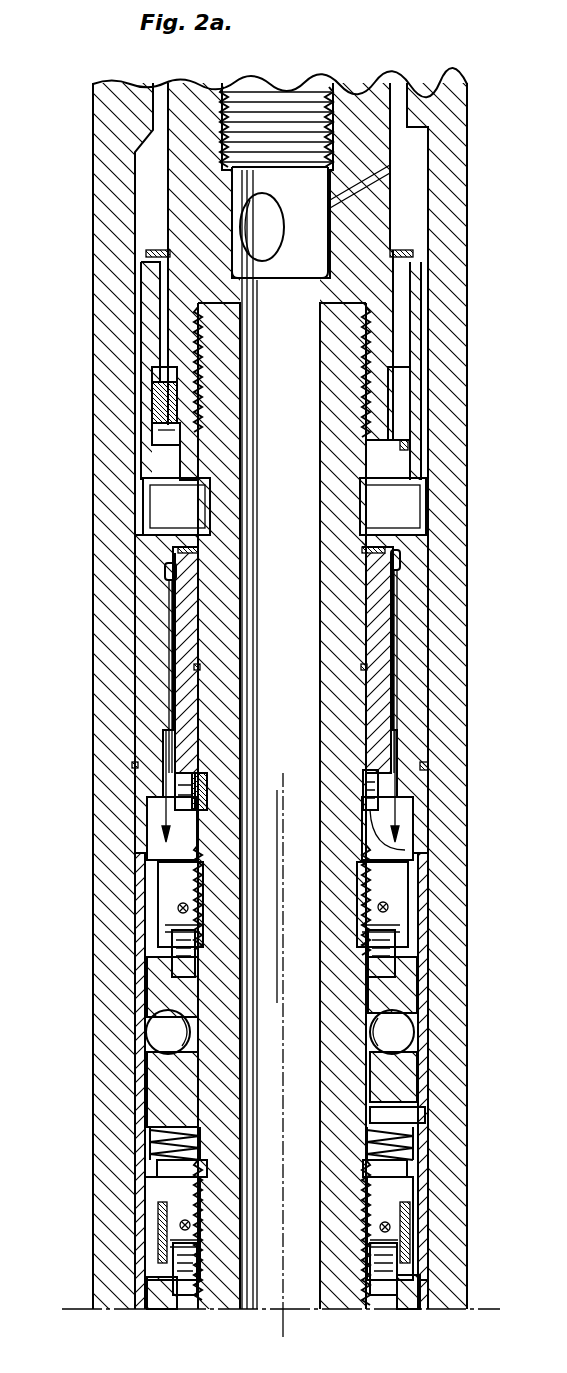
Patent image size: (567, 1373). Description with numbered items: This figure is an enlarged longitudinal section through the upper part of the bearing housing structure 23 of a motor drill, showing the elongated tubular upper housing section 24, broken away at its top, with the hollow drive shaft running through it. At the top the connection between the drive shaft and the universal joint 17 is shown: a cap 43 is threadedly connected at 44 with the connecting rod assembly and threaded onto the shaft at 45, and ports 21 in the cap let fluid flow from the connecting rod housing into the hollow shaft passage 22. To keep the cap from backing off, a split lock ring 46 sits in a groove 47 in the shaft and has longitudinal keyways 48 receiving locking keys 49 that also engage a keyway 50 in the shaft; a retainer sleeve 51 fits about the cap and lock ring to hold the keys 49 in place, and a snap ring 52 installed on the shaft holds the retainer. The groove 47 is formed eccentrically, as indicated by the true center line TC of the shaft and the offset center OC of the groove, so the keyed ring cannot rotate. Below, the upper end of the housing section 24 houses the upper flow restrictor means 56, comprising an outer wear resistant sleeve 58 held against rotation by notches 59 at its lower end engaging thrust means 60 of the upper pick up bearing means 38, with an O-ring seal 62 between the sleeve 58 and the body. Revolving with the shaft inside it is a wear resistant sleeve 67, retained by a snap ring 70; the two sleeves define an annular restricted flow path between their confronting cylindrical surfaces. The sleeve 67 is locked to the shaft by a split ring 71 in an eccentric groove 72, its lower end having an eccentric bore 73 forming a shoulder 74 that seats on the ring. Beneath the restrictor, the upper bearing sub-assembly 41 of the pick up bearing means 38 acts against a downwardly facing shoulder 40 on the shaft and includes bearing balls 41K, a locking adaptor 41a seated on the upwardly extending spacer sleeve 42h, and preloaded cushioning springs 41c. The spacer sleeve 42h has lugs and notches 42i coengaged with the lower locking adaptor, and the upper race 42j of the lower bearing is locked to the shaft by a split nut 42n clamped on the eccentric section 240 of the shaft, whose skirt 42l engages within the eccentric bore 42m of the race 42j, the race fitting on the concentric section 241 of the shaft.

The universal joint 17 is at (305, 90).
The ports 21 is at (372, 201).
The hollow shaft passage 22 is at (298, 612).
The bearing housing structure 23 is at (450, 660).
The upper housing section 24 is at (455, 302).
The upper pick up bearing means 38 is at (430, 997).
The downwardly facing shoulder 40 is at (190, 980).
The upper bearing sub-assembly 41 is at (150, 1060).
The bearing balls 41K is at (407, 1033).
The locking adaptor 41a is at (423, 1168).
The cushioning springs 41c is at (425, 1143).
The spacer sleeve 42h is at (427, 1287).
The lugs and notches 42i is at (393, 1280).
The upper race 42j is at (400, 1303).
The skirt 42l is at (190, 1282).
The eccentric bore 42m is at (190, 1280).
The split nut 42n is at (395, 1208).
The cap 43 is at (190, 100).
The threaded connection 44 is at (348, 108).
The threaded connection 45 is at (365, 335).
The split lock ring 46 is at (172, 505).
The groove 47 is at (370, 512).
The longitudinal keyways 48 is at (160, 442).
The locking keys 49 is at (162, 400).
The keyway 50 is at (165, 368).
The retainer sleeve 51 is at (157, 310).
The seal ring 52 is at (413, 255).
The upper flow restrictor means 56 is at (432, 606).
The outer wear resistant sleeve 58 is at (147, 645).
The notches 59 is at (170, 585).
The thrust means 60 is at (437, 930).
The O-ring seal 62 is at (430, 765).
The wear resistant sleeve 67 is at (187, 693).
The snap ring 70 is at (367, 549).
The split ring 71 is at (187, 787).
The groove 72 is at (190, 808).
The eccentric bore 73 is at (415, 848).
The shoulder 74 is at (375, 768).
The eccentric section 240 is at (350, 1232).
The concentric section 241 is at (213, 1283).
The true center line TC is at (274, 790).
The offset center OC is at (297, 798).